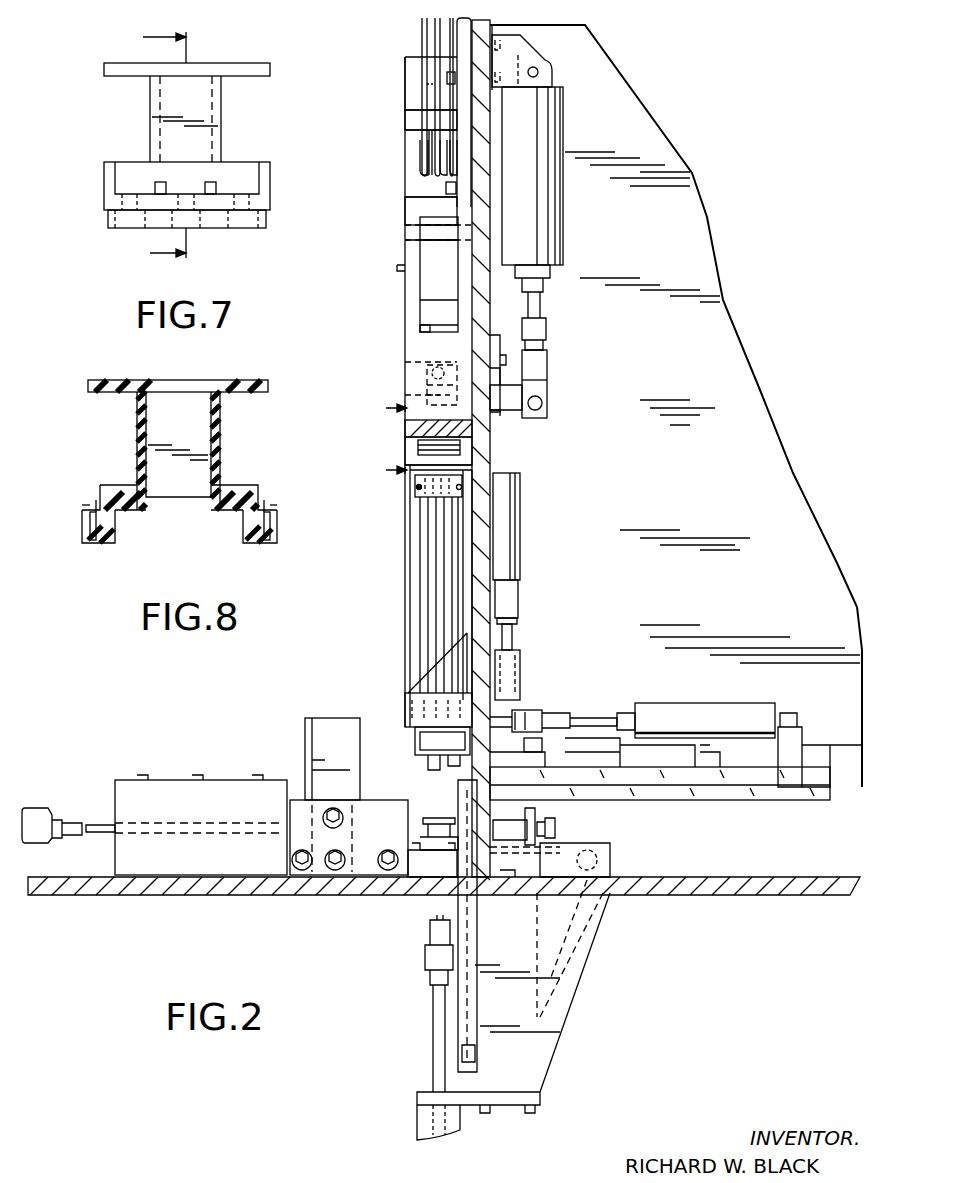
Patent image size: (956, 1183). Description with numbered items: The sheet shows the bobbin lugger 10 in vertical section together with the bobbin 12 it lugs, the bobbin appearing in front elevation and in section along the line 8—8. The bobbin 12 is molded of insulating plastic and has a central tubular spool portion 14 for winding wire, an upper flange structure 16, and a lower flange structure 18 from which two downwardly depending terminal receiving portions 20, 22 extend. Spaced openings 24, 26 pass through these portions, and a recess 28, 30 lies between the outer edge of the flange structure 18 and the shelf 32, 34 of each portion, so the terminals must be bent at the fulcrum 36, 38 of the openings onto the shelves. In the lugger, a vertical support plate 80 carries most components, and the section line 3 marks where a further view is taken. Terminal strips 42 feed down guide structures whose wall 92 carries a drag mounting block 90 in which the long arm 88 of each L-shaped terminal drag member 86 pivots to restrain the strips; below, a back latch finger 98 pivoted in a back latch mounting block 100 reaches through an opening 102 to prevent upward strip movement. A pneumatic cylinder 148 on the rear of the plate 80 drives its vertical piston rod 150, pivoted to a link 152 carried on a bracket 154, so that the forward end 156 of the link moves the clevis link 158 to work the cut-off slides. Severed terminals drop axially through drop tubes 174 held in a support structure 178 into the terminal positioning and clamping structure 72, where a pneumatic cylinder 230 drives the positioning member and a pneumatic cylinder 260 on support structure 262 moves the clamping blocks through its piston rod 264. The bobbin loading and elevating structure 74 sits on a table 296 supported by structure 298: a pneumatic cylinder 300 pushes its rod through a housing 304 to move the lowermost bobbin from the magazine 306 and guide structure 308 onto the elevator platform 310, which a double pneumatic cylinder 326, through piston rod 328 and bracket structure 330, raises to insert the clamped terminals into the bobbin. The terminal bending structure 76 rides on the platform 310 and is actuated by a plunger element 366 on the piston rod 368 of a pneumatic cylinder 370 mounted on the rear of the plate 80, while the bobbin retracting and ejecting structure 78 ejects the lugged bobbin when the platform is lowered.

In FIG. 7, the section line 8— 8 is at (164, 145).
In FIG. 2, the bobbin lugger 10 is at (402, 292).
In FIG. 7, the bobbin 12 is at (106, 111).
In FIG. 8, the bobbin 12 is at (273, 444).
In FIG. 7, the spool portion 14 is at (223, 108).
In FIG. 8, the spool portion 14 is at (222, 420).
In FIG. 7, the upper flange structure 16 is at (243, 66).
In FIG. 8, the upper flange structure 16 is at (242, 378).
In FIG. 7, the lower flange structure 18 is at (128, 168).
In FIG. 8, the lower flange structure 18 is at (125, 465).
In FIG. 7, the terminal receiving portion 20 is at (240, 228).
In FIG. 8, the terminal receiving portion 20 is at (115, 538).
In FIG. 8, the terminal receiving portion 22 is at (255, 543).
In FIG. 8, the openings 24 is at (86, 535).
In FIG. 8, the openings 26 is at (272, 535).
In FIG. 8, the recess 28 is at (96, 497).
In FIG. 8, the recess 30 is at (266, 497).
In FIG. 2, the recess 30 is at (96, 820).
In FIG. 8, the shelf 32 is at (82, 505).
In FIG. 8, the shelf 34 is at (276, 505).
In FIG. 8, the fulcrum 36 is at (88, 500).
In FIG. 8, the fulcrum 38 is at (272, 500).
In FIG. 2, the section line 3- 3 is at (384, 441).
In FIG. 2, the terminal strip 42 is at (420, 25).
In FIG. 2, the terminal positioning and clamping structure 72 is at (544, 712).
In FIG. 2, the bobbin loading and elevating structure 74 is at (236, 776).
In FIG. 2, the terminal bending structure 76 is at (556, 824).
In FIG. 2, the bobbin retracting and ejecting structure 78 is at (594, 932).
In FIG. 2, the vertical support plate 80 is at (478, 462).
In FIG. 2, the terminal drag member 86 is at (418, 58).
In FIG. 2, the long arm 88 is at (423, 100).
In FIG. 2, the drag mounting block 90 is at (413, 124).
In FIG. 2, the wall 92 is at (410, 166).
In FIG. 2, the back latch finger 98 is at (425, 243).
In FIG. 2, the back latch mounting block 100 is at (412, 209).
In FIG. 2, the opening 102 is at (420, 330).
In FIG. 2, the pneumatic cylinder 148 is at (556, 240).
In FIG. 2, the piston rod 150 is at (542, 318).
In FIG. 2, the link 152 is at (510, 406).
In FIG. 2, the bracket 154 is at (500, 415).
In FIG. 2, the forward end 156 is at (425, 363).
In FIG. 2, the clevis link 158 is at (404, 395).
In FIG. 2, the drop tubes 174 is at (428, 543).
In FIG. 2, the support structure 178 is at (410, 580).
In FIG. 2, the pneumatic cylinder 230 is at (668, 772).
In FIG. 2, the pneumatic cylinder 260 is at (685, 712).
In FIG. 2, the support structure 262 is at (785, 718).
In FIG. 2, the piston rod 264 is at (590, 722).
In FIG. 2, the table 296 is at (295, 896).
In FIG. 2, the support structure 298 is at (548, 1050).
In FIG. 2, the pneumatic cylinder 300 is at (42, 812).
In FIG. 2, the housing 304 is at (160, 780).
In FIG. 2, the bobbin loading magazine 306 is at (306, 720).
In FIG. 2, the guide structure 308 is at (366, 805).
In FIG. 2, the elevator platform 310 is at (415, 890).
In FIG. 2, the pneumatic cylinder 326 is at (460, 1125).
In FIG. 2, the piston rod 328 is at (435, 1015).
In FIG. 2, the bracket structure 330 is at (438, 912).
In FIG. 2, the plunger element 366 is at (522, 672).
In FIG. 2, the piston rod 368 is at (512, 642).
In FIG. 2, the pneumatic cylinder 370 is at (520, 568).